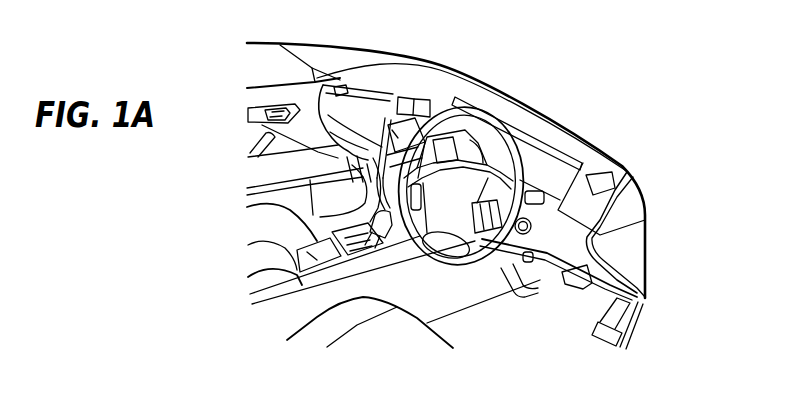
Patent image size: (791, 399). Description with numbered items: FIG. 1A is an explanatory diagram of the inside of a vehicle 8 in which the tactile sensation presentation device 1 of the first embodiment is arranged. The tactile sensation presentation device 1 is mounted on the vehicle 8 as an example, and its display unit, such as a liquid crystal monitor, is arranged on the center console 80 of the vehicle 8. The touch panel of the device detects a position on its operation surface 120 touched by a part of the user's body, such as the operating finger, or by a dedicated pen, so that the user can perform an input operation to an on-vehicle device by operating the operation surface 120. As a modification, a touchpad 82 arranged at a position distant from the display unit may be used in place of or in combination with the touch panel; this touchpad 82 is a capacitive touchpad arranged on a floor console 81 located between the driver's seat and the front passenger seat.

The tactile sensation presentation device 1 is at (397, 100).
The operation surface 120 is at (402, 135).
The vehicle 8 is at (631, 77).
The center console 80 is at (262, 125).
The floor console 81 is at (296, 268).
The touchpad 82 is at (308, 247).